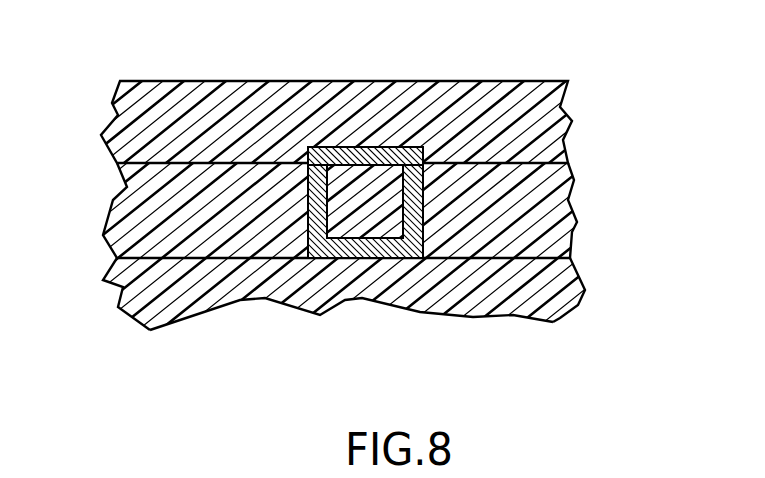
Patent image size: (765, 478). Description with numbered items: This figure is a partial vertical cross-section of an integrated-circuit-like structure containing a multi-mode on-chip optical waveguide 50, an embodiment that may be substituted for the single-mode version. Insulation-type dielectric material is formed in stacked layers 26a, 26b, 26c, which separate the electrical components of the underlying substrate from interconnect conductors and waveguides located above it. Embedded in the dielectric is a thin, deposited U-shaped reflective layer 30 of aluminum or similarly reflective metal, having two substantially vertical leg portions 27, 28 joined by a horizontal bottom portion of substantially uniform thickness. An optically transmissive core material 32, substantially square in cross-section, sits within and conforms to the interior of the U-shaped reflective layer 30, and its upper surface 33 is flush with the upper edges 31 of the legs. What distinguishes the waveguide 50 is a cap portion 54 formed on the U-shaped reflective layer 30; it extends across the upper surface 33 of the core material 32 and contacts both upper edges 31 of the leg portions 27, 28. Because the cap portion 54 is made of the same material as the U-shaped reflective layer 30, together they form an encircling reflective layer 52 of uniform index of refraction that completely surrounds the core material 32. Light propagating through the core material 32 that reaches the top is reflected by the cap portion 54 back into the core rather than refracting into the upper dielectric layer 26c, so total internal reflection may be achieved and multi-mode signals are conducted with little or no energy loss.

The dielectric layer 26a is at (570, 240).
The dielectric layer 26b is at (572, 295).
The upper dielectric layer 26c is at (116, 107).
The leg portion 27 is at (315, 186).
The leg portion 28 is at (413, 210).
The U-shaped reflective layer 30 is at (340, 287).
The upper edges 31 is at (317, 150).
The core material 32 is at (360, 178).
The upper surface 33 is at (388, 160).
The waveguide 50 is at (452, 151).
The encircling reflective layer 52 is at (438, 186).
The cap portion 54 is at (378, 150).